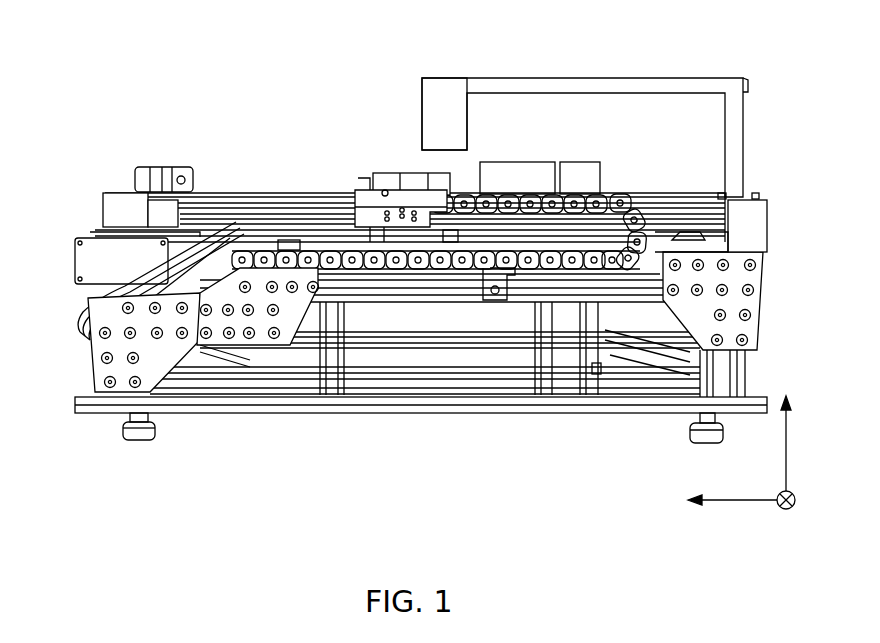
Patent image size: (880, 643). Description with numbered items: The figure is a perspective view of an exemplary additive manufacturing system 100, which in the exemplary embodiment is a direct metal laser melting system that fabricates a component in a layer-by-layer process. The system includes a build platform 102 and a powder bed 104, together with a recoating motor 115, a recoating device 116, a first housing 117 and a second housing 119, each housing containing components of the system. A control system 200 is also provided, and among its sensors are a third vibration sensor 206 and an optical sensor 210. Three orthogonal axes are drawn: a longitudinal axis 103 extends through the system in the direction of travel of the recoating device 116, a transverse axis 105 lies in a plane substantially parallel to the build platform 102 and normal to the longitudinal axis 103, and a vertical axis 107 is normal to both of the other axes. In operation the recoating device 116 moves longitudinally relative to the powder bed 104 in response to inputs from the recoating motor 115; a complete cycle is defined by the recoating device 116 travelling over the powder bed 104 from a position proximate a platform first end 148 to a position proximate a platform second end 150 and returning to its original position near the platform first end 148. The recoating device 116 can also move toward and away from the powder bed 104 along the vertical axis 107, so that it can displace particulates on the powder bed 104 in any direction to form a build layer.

The additive manufacturing system 100 is at (673, 40).
The control system 200 is at (498, 52).
The optical sensor 210 is at (420, 114).
The powder bed 104 is at (384, 158).
The recoating motor 115 is at (150, 167).
The recoating device 116 is at (342, 193).
The first housing 117 is at (518, 173).
The second housing 119 is at (578, 173).
The platform first end 148 is at (773, 243).
The platform second end 150 is at (66, 308).
The build platform 102 is at (565, 300).
The third vibration sensor 206 is at (608, 355).
The vertical axis 107 is at (780, 454).
The longitudinal axis 103 is at (718, 502).
The transverse axis 105 is at (786, 510).